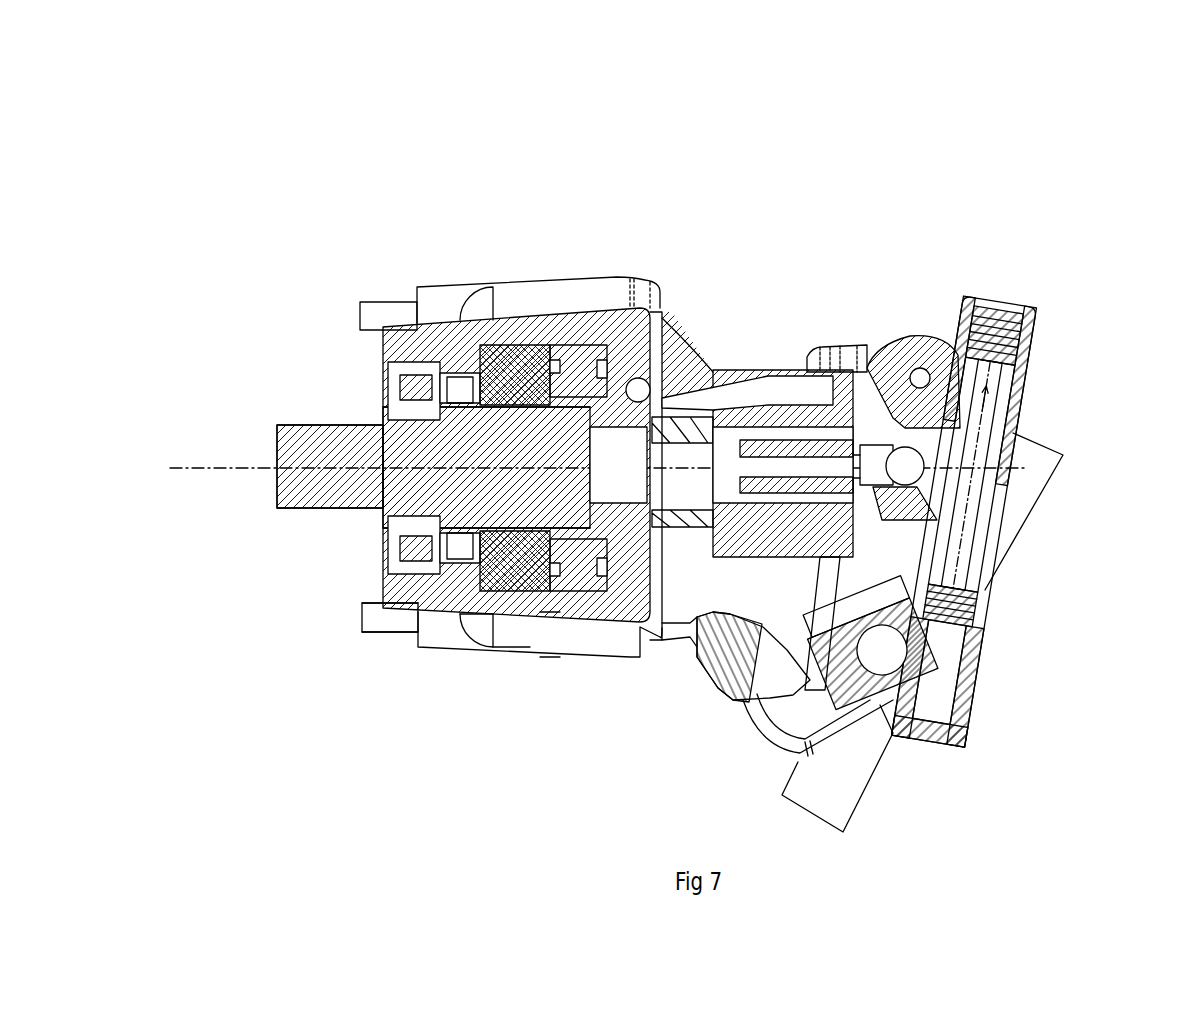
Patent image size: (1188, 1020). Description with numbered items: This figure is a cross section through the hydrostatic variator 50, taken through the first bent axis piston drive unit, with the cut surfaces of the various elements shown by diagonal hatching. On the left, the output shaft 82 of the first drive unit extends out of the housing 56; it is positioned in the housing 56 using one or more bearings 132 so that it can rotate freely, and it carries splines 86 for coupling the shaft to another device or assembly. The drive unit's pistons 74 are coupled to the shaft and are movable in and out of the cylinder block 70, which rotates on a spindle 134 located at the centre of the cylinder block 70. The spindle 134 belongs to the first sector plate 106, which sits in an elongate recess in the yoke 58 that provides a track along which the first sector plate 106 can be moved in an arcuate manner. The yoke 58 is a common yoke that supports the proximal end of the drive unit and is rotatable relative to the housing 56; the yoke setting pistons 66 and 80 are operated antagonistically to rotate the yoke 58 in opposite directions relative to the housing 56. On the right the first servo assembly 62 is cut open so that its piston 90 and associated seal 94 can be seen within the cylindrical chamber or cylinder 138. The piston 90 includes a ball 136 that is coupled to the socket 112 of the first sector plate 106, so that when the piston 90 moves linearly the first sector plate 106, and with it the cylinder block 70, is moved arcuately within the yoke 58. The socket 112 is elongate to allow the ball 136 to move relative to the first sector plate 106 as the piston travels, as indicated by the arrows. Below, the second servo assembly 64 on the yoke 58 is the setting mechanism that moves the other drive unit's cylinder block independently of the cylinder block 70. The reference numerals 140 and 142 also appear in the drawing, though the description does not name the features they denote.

The hydrostatic variator 50 is at (245, 105).
The housing 56 is at (420, 325).
The yoke 58 is at (925, 342).
The first servo assembly 62 is at (1048, 325).
The second servo assembly 64 is at (870, 762).
The setting piston 66 is at (685, 338).
The cylinder block 70 is at (775, 575).
The pistons 74 is at (706, 345).
The setting piston 80 is at (672, 637).
The output shaft 82 is at (325, 515).
The splines 86 is at (285, 425).
The piston 90 is at (970, 505).
The seal 94 is at (1030, 342).
The first sector plate 106 is at (880, 343).
The socket 112 is at (920, 500).
The bearings 132 is at (388, 606).
The spindle 134 is at (821, 347).
The ball 136 is at (960, 452).
The cylinder 138 is at (1010, 385).
The coupling 140 is at (640, 455).
The stem 142 is at (795, 342).